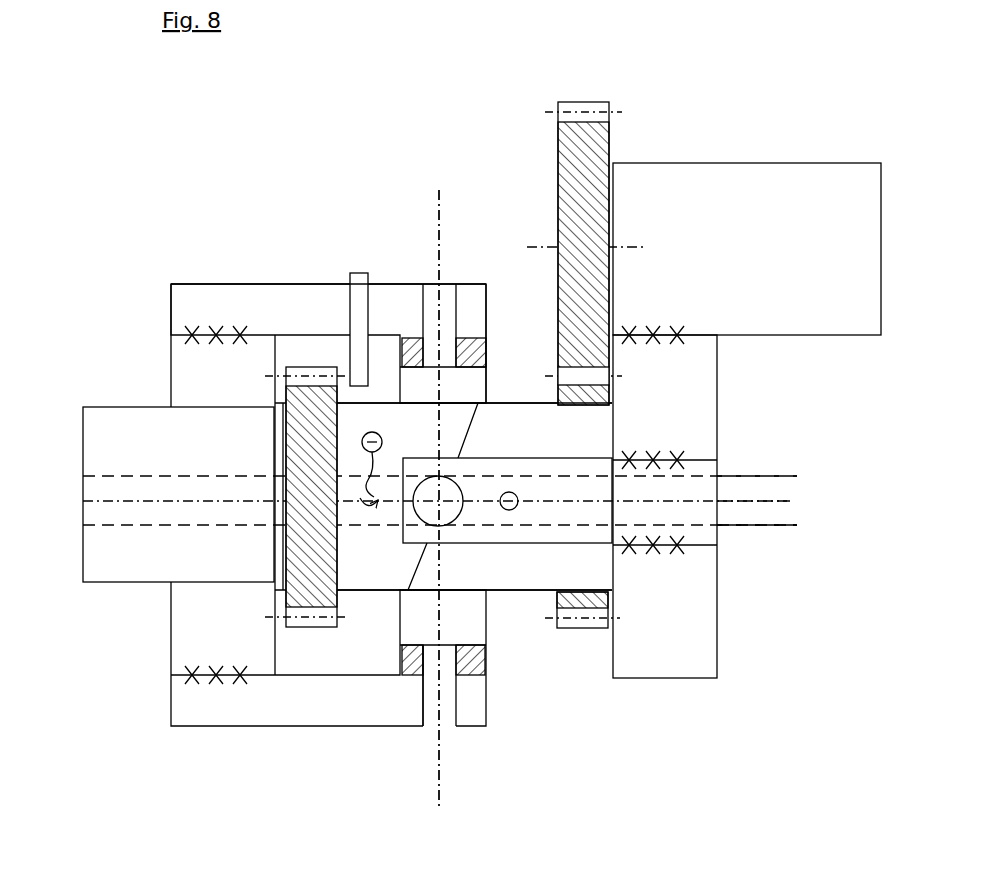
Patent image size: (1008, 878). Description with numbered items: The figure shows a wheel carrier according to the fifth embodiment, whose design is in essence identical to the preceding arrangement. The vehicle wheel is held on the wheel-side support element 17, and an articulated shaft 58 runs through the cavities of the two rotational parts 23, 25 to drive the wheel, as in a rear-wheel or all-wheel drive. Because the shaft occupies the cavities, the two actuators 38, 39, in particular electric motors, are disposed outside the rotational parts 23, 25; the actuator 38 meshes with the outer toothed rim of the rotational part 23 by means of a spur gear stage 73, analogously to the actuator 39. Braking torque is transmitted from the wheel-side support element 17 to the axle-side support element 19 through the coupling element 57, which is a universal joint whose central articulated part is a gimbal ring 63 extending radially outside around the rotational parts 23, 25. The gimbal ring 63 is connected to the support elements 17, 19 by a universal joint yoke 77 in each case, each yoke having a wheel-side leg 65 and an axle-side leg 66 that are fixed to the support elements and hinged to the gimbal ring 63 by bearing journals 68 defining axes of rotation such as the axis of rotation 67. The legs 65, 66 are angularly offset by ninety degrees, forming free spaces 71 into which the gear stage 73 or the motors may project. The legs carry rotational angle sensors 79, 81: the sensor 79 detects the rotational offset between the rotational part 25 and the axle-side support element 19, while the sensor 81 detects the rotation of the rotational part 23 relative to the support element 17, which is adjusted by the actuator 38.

The wheel-side support element 17 is at (171, 380).
The axle-side support element 19 is at (665, 502).
The rotational part 23 is at (375, 590).
The rotational part 25 is at (486, 496).
The actuator 38 is at (83, 438).
The actuator 39 is at (747, 249).
The coupling element 57 is at (390, 262).
The articulated shaft 58 is at (782, 528).
The gimbal ring 63 is at (487, 627).
The wheel-side leg 65 is at (171, 306).
The axle-side leg 66 is at (717, 490).
The axis of rotation 67 is at (440, 255).
The bearing journal 68 is at (423, 708).
The free space 71 is at (503, 375).
The spur gear stage 73 is at (300, 632).
The universal joint yoke 77 is at (205, 280).
The rotational angle sensor 79 is at (511, 510).
The rotational angle sensor 81 is at (350, 302).